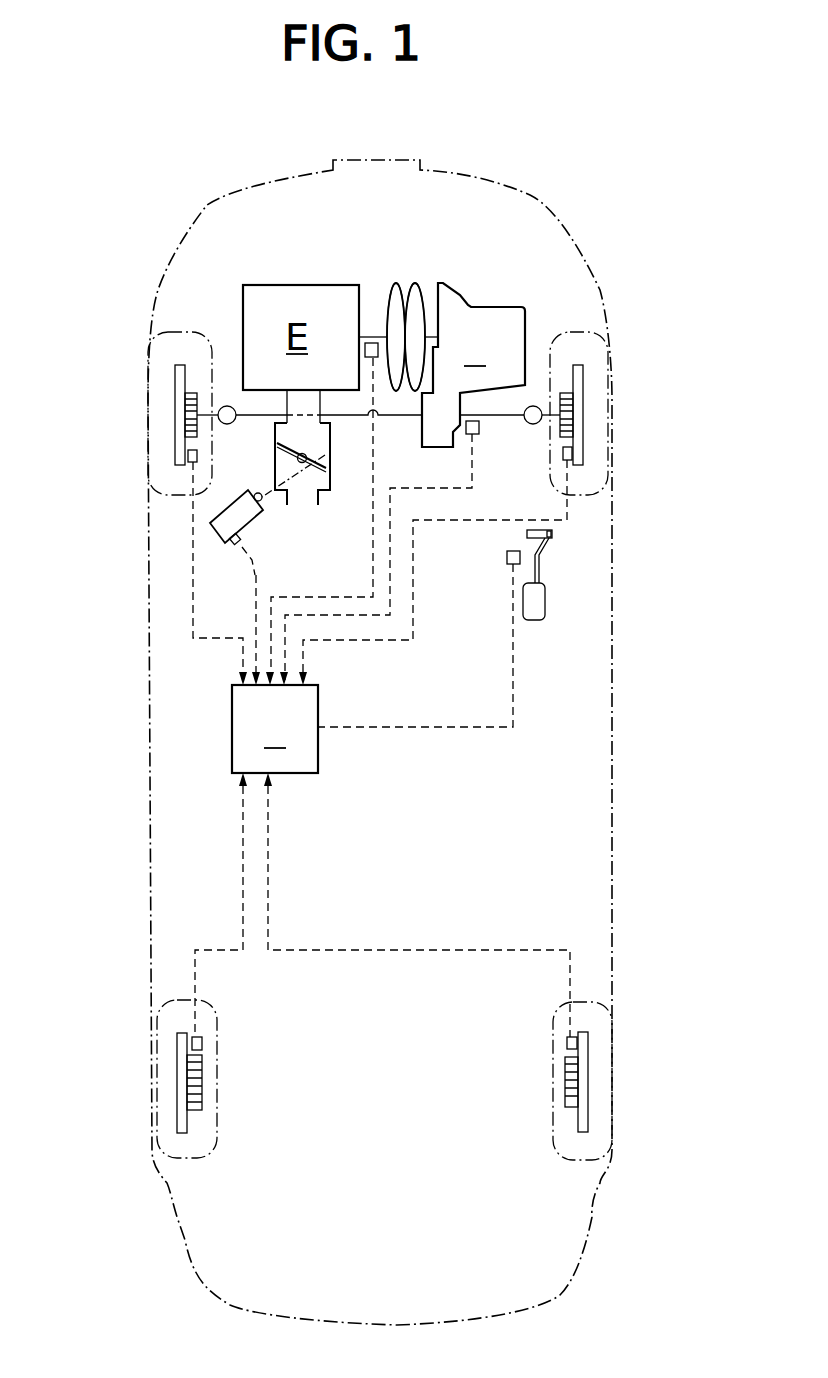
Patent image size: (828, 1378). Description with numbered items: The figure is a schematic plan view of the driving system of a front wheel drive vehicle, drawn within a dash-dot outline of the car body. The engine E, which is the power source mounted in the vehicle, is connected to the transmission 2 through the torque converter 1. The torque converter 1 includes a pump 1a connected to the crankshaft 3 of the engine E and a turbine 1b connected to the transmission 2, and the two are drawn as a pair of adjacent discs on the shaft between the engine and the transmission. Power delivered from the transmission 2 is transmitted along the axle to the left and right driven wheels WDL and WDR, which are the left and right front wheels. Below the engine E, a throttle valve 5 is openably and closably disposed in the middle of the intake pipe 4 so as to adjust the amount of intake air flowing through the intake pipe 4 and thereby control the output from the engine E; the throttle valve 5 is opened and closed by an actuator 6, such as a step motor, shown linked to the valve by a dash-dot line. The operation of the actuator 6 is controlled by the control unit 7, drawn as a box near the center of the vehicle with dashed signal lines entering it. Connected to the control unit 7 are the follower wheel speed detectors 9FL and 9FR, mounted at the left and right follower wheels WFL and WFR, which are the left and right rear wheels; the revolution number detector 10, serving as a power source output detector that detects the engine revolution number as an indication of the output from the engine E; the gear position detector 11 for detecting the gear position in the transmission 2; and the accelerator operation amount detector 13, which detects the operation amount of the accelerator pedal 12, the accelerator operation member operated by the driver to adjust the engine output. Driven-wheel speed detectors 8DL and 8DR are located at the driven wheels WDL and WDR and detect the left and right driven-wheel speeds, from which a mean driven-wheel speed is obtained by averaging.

The torque converter 1 is at (467, 232).
The pump 1a is at (393, 300).
The turbine 1b is at (417, 302).
The transmission 2 is at (473, 365).
The crankshaft 3 is at (368, 333).
The intake pipe 4 is at (320, 497).
The throttle valve 5 is at (330, 447).
The actuator 6 is at (255, 513).
The control unit 7 is at (275, 729).
The driven-wheel speed detector 8DL is at (188, 460).
The driven-wheel speed detector 8DR is at (578, 453).
The follower wheel speed detector 9FL is at (203, 1043).
The follower wheel speed detector 9FR is at (567, 1043).
The revolution number detector 10 is at (364, 354).
The gear position detector 11 is at (479, 428).
The accelerator pedal 12 is at (538, 605).
The accelerator operation amount detector 13 is at (507, 563).
The left driven wheel WDL is at (148, 397).
The right driven wheel WDR is at (610, 397).
The left follower wheel WFL is at (157, 1065).
The right follower wheel WFR is at (612, 1048).